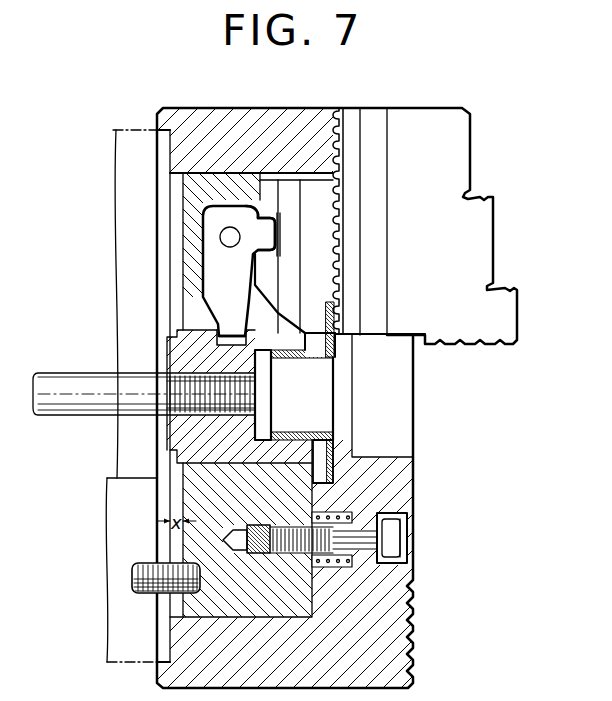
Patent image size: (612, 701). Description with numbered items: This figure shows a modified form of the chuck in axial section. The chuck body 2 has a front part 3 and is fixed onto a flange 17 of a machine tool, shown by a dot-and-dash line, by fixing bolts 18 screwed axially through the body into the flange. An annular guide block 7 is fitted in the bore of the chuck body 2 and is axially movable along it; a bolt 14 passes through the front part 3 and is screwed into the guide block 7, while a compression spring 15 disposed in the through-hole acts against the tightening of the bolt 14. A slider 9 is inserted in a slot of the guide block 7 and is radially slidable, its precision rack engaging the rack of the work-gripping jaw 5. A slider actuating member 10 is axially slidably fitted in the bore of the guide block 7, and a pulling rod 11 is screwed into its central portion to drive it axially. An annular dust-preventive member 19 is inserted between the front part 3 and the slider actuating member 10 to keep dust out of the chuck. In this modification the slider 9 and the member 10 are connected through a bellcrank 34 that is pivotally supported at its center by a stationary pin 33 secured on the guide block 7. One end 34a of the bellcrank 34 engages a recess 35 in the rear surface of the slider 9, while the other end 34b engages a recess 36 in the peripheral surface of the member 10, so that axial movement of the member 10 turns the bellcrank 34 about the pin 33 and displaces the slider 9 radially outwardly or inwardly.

The flange 17 is at (138, 137).
The chuck body 2 is at (262, 116).
The work-gripping jaw 5 is at (418, 124).
The annular guide block 7 is at (205, 183).
The one end of the bellcrank 34a is at (253, 222).
The slider 9 is at (318, 192).
The stationary pin 33 is at (227, 233).
The bellcrank 34 is at (225, 258).
The recess 35 is at (260, 225).
The other end of the bellcrank 34b is at (227, 327).
The slider actuating member 10 is at (197, 352).
The pulling rod 11 is at (82, 383).
The recess 36 is at (240, 342).
The annular dust-preventive member 19 is at (333, 448).
The front part 3 is at (382, 467).
The fixing bolt 18 is at (160, 572).
The compression spring 15 is at (377, 538).
The bolt 14 is at (392, 533).